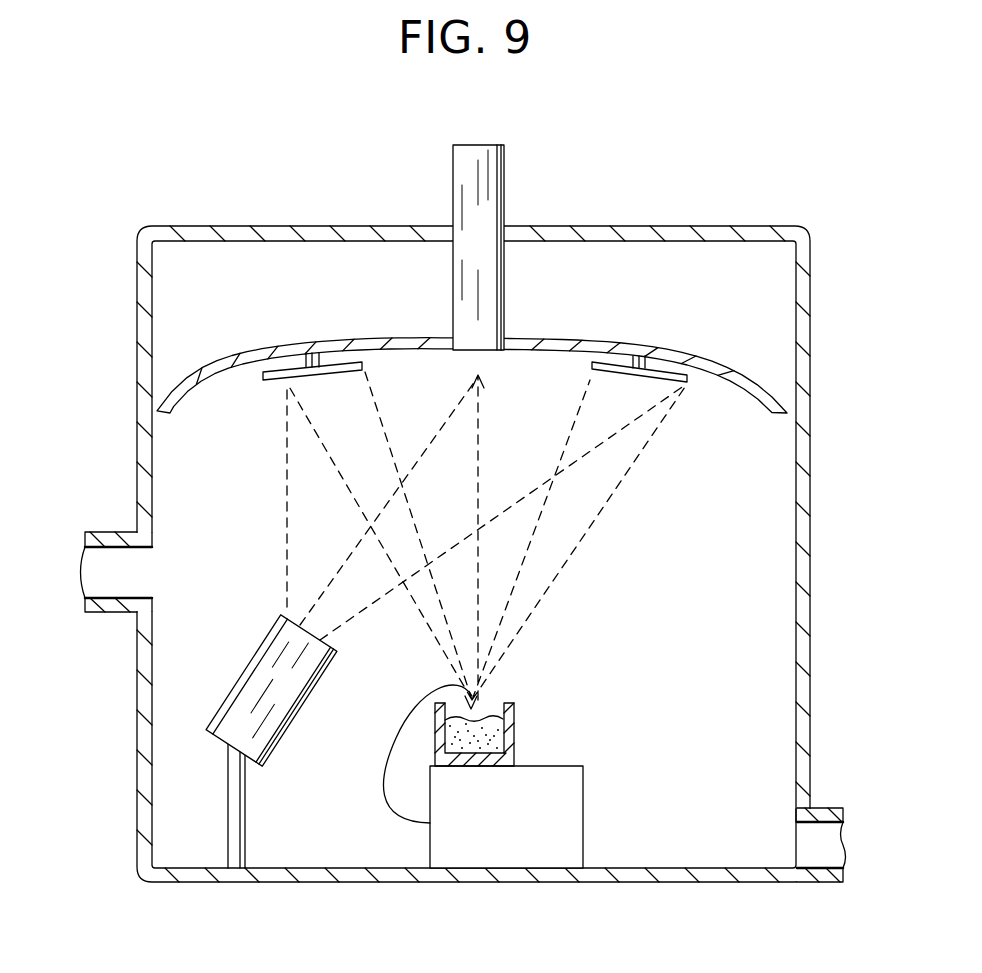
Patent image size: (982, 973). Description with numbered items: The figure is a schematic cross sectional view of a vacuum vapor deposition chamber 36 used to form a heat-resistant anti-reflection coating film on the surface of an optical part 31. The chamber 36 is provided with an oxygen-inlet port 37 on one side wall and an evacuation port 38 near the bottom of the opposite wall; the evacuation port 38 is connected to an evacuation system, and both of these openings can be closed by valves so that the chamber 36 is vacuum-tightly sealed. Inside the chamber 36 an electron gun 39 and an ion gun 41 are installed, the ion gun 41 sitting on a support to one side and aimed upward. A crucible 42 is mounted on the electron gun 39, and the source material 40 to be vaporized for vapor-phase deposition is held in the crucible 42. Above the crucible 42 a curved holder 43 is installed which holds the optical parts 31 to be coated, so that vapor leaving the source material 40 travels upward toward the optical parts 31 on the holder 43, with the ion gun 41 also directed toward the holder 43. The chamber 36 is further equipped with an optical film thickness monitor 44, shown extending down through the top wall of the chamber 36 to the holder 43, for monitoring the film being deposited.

The optical part 31 is at (338, 368).
The vacuum vapor deposition chamber 36 is at (802, 316).
The oxygen-inlet port 37 is at (116, 570).
The evacuation port 38 is at (822, 840).
The electron gun 39 is at (575, 822).
The source material 40 is at (490, 720).
The ion gun 41 is at (248, 690).
The crucible 42 is at (510, 740).
The holder 43 is at (228, 365).
The optical film thickness monitor 44 is at (492, 172).